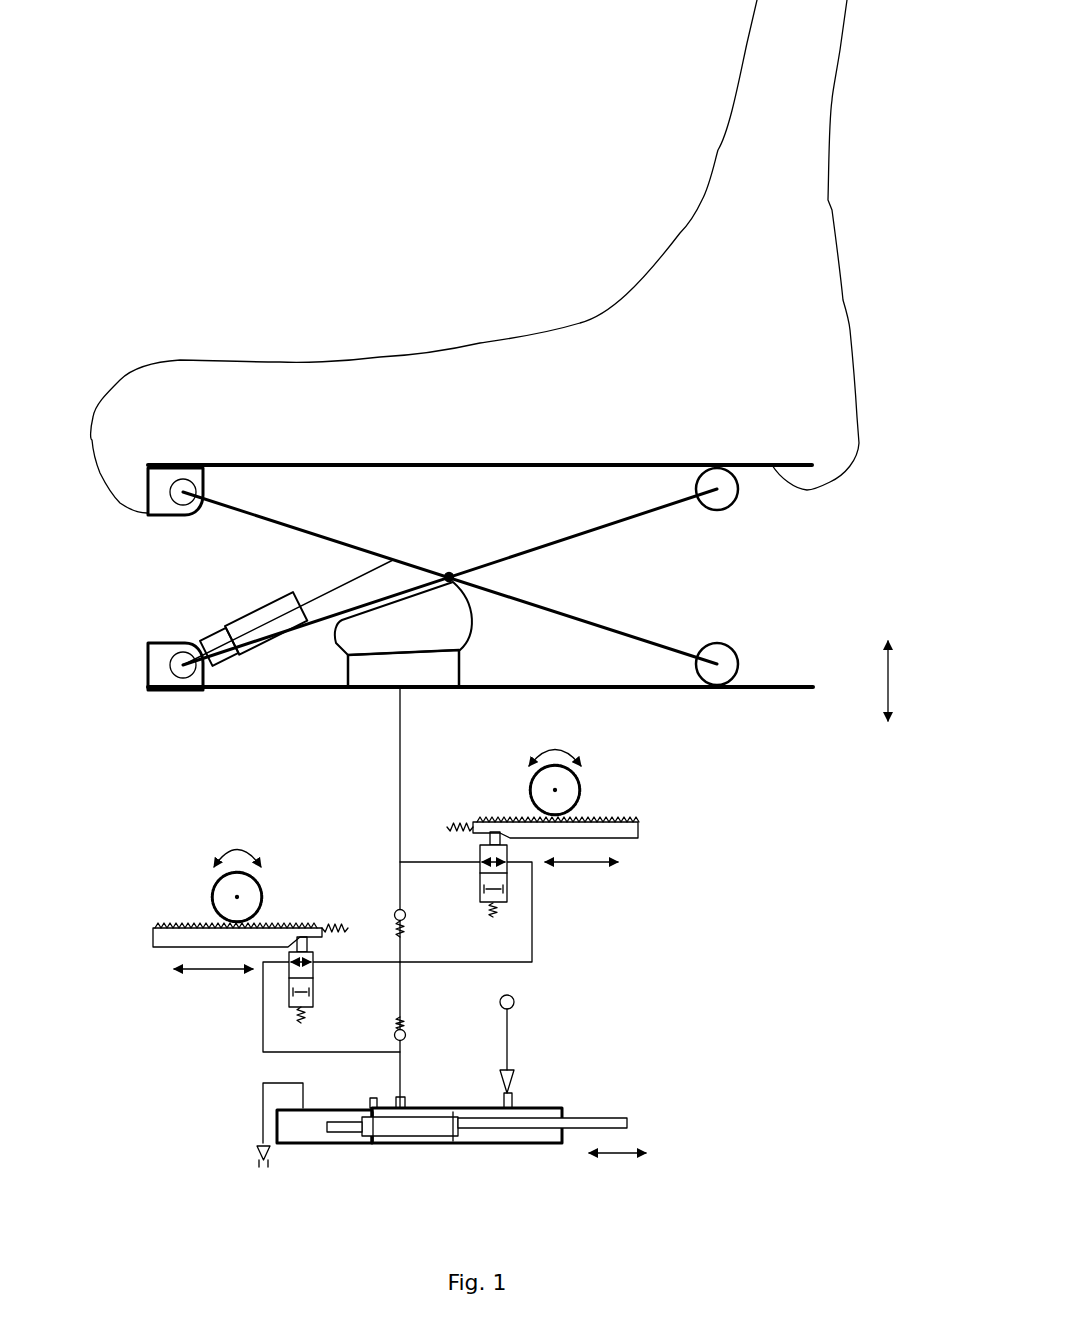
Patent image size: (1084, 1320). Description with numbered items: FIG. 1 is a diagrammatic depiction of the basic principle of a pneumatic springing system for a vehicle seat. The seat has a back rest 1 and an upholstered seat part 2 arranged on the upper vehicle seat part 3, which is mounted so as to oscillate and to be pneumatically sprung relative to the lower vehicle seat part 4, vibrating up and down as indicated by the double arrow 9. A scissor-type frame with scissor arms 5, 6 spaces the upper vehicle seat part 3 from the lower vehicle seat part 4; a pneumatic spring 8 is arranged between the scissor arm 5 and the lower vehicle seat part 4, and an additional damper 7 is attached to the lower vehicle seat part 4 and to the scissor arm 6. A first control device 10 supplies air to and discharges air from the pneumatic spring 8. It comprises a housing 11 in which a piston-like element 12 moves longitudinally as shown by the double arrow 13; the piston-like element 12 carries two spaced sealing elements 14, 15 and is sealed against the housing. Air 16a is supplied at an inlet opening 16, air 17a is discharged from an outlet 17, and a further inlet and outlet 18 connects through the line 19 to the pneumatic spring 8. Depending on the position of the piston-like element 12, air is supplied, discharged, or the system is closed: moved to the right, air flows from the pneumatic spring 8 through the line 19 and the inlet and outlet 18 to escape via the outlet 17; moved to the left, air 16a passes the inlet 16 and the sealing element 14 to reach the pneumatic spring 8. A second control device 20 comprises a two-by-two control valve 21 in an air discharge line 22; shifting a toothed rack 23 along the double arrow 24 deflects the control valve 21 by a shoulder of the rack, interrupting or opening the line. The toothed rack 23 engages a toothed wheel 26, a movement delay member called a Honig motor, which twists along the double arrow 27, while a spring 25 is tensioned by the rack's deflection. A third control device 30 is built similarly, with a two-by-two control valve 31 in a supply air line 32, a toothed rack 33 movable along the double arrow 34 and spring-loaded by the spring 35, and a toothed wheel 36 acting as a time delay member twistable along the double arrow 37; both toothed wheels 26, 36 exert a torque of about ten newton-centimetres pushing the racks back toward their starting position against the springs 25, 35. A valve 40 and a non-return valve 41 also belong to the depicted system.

The back rest 1 is at (808, 340).
The upholstered seat part 2 is at (260, 390).
The upper vehicle seat part 3 is at (650, 473).
The lower vehicle seat part 4 is at (667, 687).
The scissor arm 5 is at (603, 528).
The scissor arm 6 is at (652, 637).
The damper 7 is at (256, 621).
The pneumatic spring 8 is at (450, 627).
The double arrow 9 is at (890, 697).
The first control device 10 is at (412, 1130).
The housing 11 is at (523, 1143).
The piston-like element 12 is at (427, 1137).
The double arrow 13 is at (610, 1157).
The sealing element 14 is at (453, 1108).
The sealing element 15 is at (373, 1108).
The inlet opening 16 is at (517, 1095).
The air 16a is at (507, 1023).
The outlet 17 is at (308, 1113).
The air 17a is at (262, 1103).
The inlet and outlet 18 is at (408, 1098).
The line 19 is at (407, 1040).
The second control device 20 is at (243, 930).
The 2/2 control valve 21 is at (313, 978).
The air discharge line 22 is at (263, 1023).
The toothed rack 23 is at (153, 947).
The double arrow 24 is at (192, 977).
The spring 25 is at (330, 927).
The toothed wheel 26 is at (255, 907).
The double arrow 27 is at (238, 850).
The third control device 30 is at (588, 843).
The 2/2 control valve 31 is at (507, 880).
The supply air line 32 is at (532, 938).
The toothed rack 33 is at (633, 828).
The double arrow 34 is at (612, 863).
The spring 35 is at (453, 822).
The toothed wheel 36 is at (563, 783).
The double arrow 37 is at (557, 750).
The valve 40 is at (407, 1022).
The non-return valve 41 is at (407, 915).